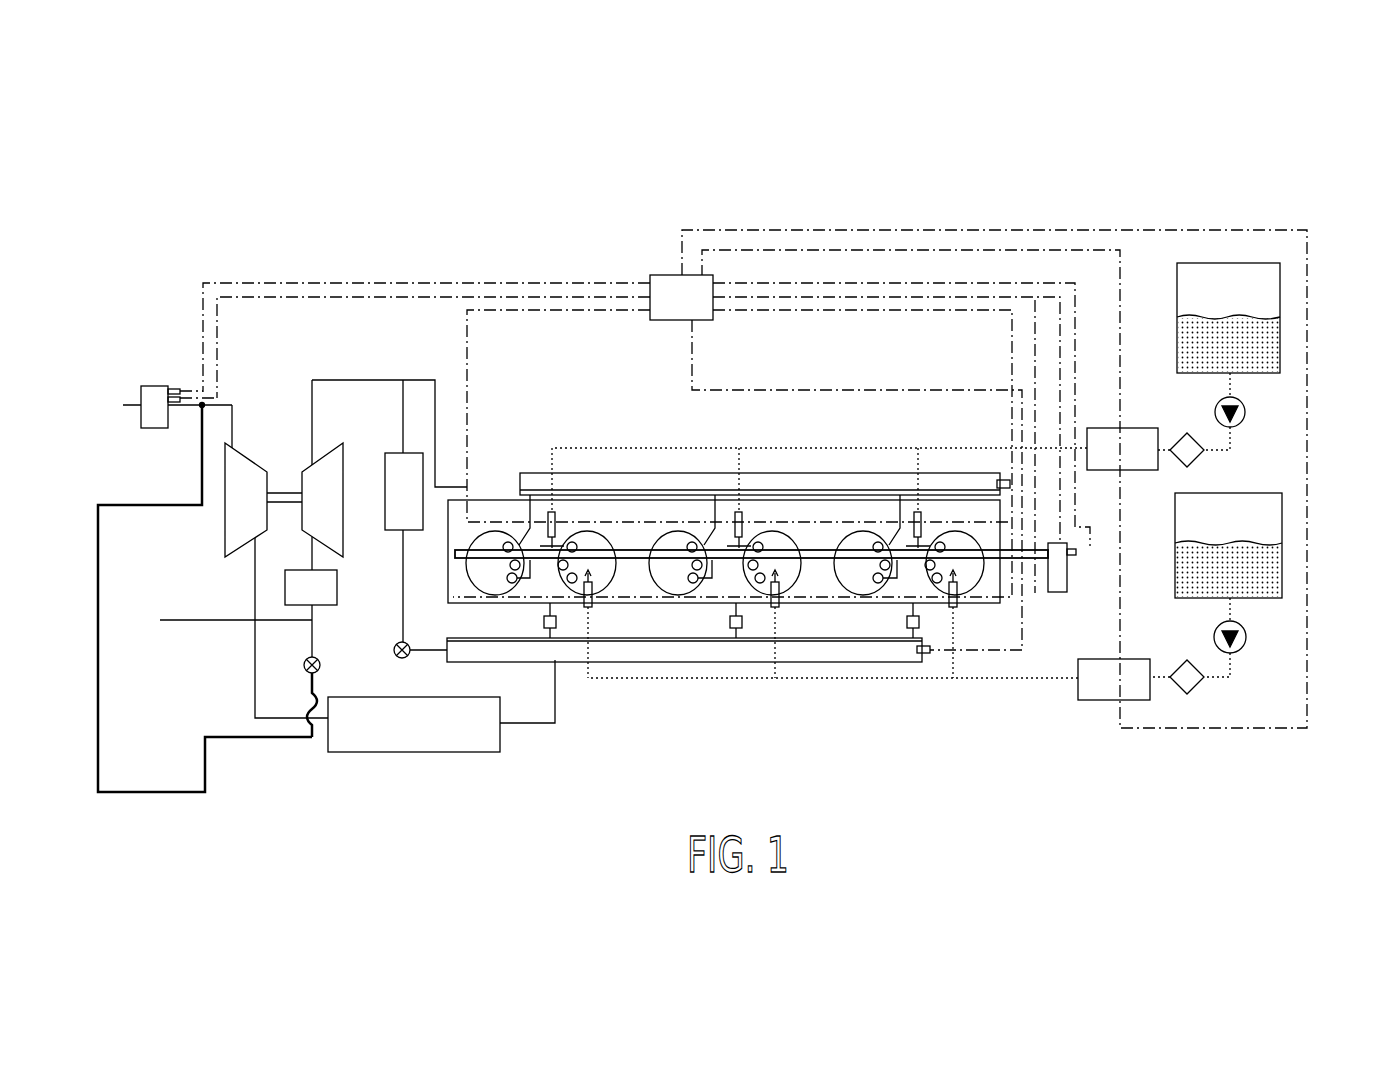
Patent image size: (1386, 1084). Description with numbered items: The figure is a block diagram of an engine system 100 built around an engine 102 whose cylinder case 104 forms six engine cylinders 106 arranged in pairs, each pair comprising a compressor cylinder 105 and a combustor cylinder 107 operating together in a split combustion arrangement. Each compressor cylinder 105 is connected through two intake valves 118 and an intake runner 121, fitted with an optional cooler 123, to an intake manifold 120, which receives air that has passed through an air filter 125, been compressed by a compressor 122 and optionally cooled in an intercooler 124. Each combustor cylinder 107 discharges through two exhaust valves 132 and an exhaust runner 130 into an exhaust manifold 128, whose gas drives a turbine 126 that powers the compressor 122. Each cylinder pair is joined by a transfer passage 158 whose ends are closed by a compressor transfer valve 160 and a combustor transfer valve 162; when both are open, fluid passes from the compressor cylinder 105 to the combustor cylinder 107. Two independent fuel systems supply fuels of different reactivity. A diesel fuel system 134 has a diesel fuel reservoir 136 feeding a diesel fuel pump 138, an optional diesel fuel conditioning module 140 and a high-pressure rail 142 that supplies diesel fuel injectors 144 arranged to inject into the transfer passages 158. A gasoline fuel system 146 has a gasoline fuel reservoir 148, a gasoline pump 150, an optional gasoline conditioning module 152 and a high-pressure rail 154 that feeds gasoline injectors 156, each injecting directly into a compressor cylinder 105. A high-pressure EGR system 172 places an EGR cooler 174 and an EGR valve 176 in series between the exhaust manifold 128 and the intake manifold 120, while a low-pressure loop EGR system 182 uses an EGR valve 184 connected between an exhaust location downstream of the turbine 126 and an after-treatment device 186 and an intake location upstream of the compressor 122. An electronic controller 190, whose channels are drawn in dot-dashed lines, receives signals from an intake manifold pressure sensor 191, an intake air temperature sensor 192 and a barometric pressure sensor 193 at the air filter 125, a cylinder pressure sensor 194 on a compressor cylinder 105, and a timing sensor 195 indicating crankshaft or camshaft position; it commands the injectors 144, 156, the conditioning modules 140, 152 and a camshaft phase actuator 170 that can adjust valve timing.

The engine system 100 is at (285, 207).
The engine 102 is at (658, 722).
The cylinder case 104 is at (985, 518).
The compressor cylinder 105 is at (592, 540).
The engine cylinders 106 is at (507, 540).
The combustor cylinder 107 is at (487, 537).
The intake valve 118 is at (586, 607).
The intake manifold 120 is at (812, 652).
The intake runner 121 is at (905, 605).
The compressor 122 is at (223, 525).
The cooler 123 is at (735, 628).
The intercooler 124 is at (330, 752).
The air filter 125 is at (152, 386).
The turbine 126 is at (343, 540).
The exhaust manifold 128 is at (640, 475).
The exhaust runner 130 is at (745, 512).
The exhaust valve 132 is at (708, 495).
The diesel fuel system 134 is at (1240, 218).
The diesel fuel reservoir 136 is at (1265, 290).
The diesel fuel pump 138 is at (1237, 405).
The diesel fuel conditioning module 140 is at (1198, 460).
The high-pressure rail 142 is at (1140, 440).
The diesel fuel injectors 144 is at (752, 545).
The gasoline fuel system 146 is at (1280, 752).
The gasoline fuel reservoir 148 is at (1268, 523).
The gasoline pump 150 is at (1245, 633).
The gasoline conditioning module 152 is at (1193, 688).
The high-pressure rail 154 is at (1127, 695).
The gasoline injectors 156 is at (565, 540).
The transfer passage 158 is at (527, 577).
The compressor transfer valve 160 is at (962, 530).
The combustor transfer valve 162 is at (870, 605).
The camshaft phase actuator 170 is at (1068, 580).
The high-pressure EGR system 172 is at (367, 355).
The EGR cooler 174 is at (385, 477).
The EGR valve 176 is at (393, 650).
The low-pressure loop EGR system 182 is at (163, 662).
The EGR valve 184 is at (303, 662).
The after-treatment device 186 is at (285, 586).
The electronic controller 190 is at (655, 275).
The intake manifold pressure sensor 191 is at (930, 650).
The intake air temperature sensor 192 is at (173, 388).
The barometric pressure sensor 193 is at (177, 405).
The cylinder pressure sensor 194 is at (1000, 603).
The timing sensor 195 is at (1076, 552).